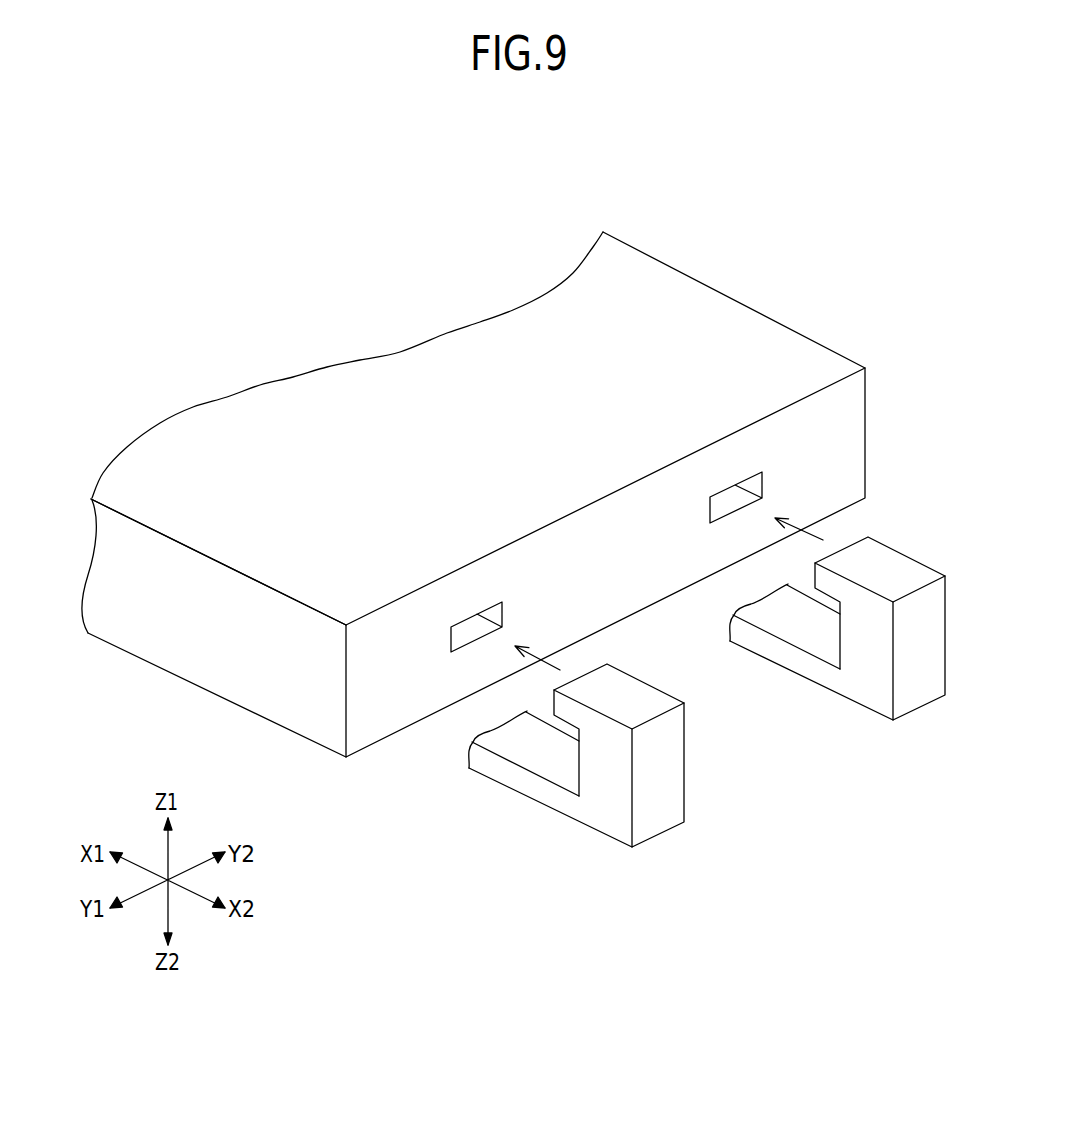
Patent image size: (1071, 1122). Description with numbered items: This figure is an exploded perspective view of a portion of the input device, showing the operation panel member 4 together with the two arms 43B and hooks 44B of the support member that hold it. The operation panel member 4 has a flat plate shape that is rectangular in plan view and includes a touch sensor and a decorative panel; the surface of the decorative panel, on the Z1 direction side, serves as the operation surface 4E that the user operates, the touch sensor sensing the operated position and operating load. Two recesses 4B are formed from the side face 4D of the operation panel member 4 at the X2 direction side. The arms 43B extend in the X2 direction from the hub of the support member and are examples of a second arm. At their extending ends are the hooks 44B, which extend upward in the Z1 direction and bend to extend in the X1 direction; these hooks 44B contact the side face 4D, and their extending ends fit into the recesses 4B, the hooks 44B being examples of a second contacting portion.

The operation panel member 4 is at (511, 514).
The recess 4B is at (736, 498).
The side face 4D is at (385, 693).
The operation surface 4E is at (435, 365).
The arm 43B is at (540, 792).
The hook 44B is at (627, 687).